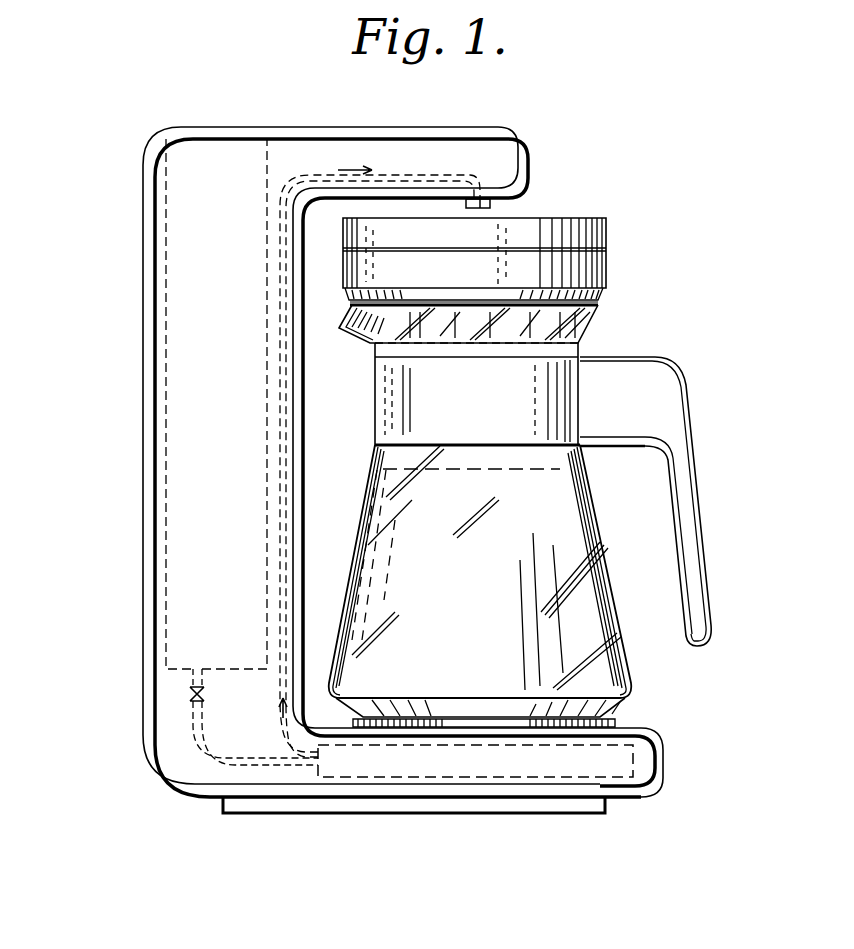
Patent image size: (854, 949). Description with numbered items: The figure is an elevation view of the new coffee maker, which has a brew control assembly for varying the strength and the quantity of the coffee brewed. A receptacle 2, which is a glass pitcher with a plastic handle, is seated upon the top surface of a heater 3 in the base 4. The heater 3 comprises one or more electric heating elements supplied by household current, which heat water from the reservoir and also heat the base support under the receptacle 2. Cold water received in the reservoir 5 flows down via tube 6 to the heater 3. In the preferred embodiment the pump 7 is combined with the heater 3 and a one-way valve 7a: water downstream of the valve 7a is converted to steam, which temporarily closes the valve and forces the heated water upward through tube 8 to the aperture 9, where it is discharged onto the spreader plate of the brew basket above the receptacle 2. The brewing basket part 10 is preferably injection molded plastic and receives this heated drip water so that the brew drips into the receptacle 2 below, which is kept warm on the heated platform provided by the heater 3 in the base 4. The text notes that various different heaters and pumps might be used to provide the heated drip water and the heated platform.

The receptacle 2 is at (602, 542).
The heater 3 is at (616, 719).
The base 4 is at (660, 790).
The reservoir 5 is at (166, 451).
The tube 6 is at (192, 738).
The pump 7 is at (628, 755).
The one-way valve 7a is at (187, 693).
The tube 8 is at (275, 680).
The aperture 9 is at (500, 209).
The brewing basket part 10 is at (628, 250).